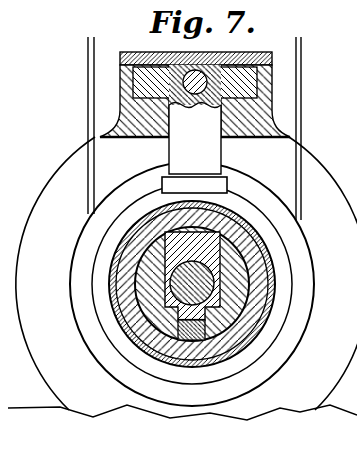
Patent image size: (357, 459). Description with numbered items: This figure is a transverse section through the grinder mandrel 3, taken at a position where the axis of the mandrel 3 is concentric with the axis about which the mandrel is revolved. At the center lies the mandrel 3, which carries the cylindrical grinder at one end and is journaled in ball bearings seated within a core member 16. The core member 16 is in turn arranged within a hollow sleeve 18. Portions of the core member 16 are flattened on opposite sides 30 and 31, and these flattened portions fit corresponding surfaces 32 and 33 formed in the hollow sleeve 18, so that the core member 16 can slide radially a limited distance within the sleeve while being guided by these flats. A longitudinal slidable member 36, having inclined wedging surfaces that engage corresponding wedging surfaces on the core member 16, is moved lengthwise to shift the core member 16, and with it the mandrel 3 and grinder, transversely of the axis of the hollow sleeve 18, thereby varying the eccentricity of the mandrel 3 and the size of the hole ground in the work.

The mandrel 3 is at (178, 284).
The core member 16 is at (226, 204).
The hollow sleeve 18 is at (168, 332).
The flattened side of core 30 is at (222, 250).
The flattened side of core 31 is at (160, 249).
The surface in hollow sleeve 32 is at (240, 310).
The surface in hollow sleeve 33 is at (157, 303).
The longitudinal slidable member 36 is at (238, 367).